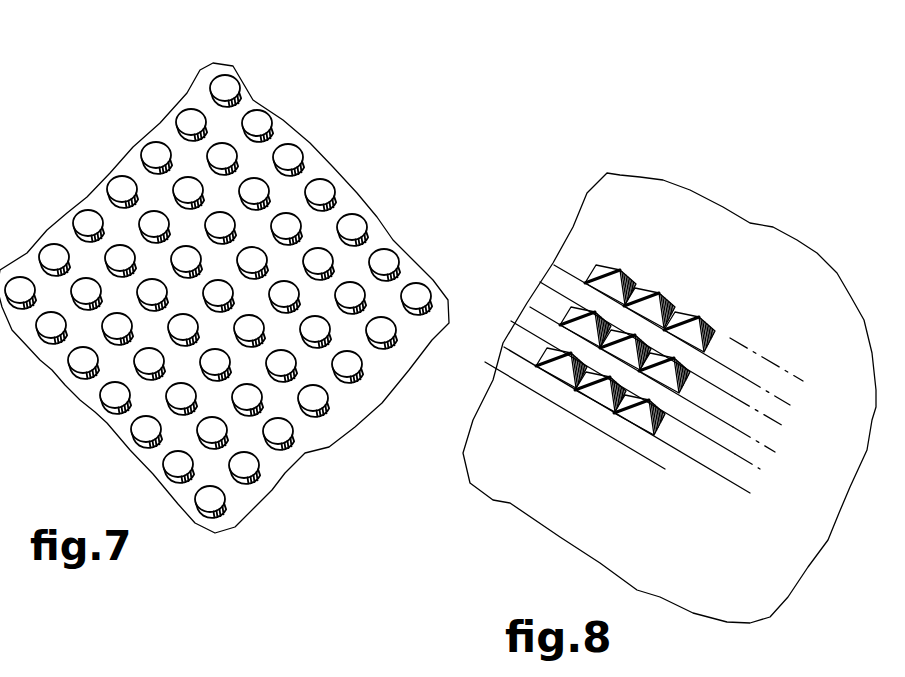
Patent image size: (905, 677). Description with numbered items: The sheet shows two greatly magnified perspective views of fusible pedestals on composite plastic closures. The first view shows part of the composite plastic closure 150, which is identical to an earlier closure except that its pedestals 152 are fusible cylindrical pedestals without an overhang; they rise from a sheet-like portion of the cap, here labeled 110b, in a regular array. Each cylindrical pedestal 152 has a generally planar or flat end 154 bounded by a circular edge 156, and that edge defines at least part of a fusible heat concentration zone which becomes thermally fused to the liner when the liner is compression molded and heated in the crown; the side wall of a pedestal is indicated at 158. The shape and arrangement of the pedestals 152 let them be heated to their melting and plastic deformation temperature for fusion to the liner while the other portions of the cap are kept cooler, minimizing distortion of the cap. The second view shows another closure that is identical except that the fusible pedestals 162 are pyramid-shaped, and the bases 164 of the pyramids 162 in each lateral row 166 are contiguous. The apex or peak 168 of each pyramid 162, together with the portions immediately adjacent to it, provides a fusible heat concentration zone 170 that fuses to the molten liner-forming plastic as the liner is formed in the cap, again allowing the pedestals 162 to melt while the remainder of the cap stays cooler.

In FIG. 7, the composite plastic closure 150 is at (119, 111).
In FIG. 7, the fusible cylindrical pedestals 152 is at (300, 158).
In FIG. 7, the flat end 154 is at (227, 86).
In FIG. 7, the circular edge 156 is at (260, 108).
In FIG. 7, the projection side wall 158 is at (340, 183).
In FIG. 7, the sheet 110b is at (344, 411).
In FIG. 8, the sheet 110b is at (705, 222).
In FIG. 8, the fusible pyramid-shaped pedestals 162 is at (644, 347).
In FIG. 8, the bases 164 is at (636, 283).
In FIG. 8, the lateral row 166 is at (575, 266).
In FIG. 8, the apex 168 is at (708, 322).
In FIG. 8, the fusible heat concentration zone 170 is at (675, 287).